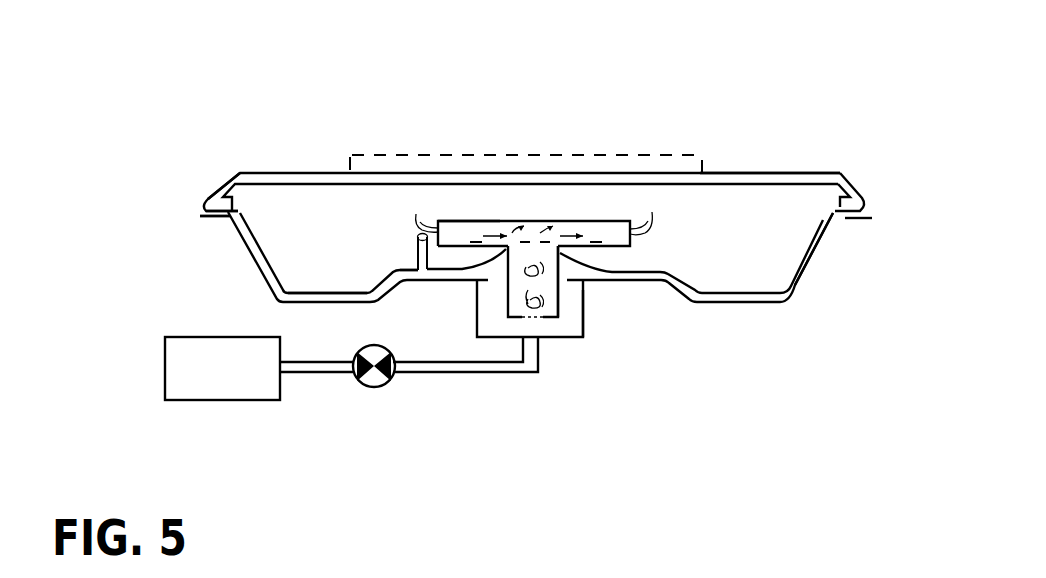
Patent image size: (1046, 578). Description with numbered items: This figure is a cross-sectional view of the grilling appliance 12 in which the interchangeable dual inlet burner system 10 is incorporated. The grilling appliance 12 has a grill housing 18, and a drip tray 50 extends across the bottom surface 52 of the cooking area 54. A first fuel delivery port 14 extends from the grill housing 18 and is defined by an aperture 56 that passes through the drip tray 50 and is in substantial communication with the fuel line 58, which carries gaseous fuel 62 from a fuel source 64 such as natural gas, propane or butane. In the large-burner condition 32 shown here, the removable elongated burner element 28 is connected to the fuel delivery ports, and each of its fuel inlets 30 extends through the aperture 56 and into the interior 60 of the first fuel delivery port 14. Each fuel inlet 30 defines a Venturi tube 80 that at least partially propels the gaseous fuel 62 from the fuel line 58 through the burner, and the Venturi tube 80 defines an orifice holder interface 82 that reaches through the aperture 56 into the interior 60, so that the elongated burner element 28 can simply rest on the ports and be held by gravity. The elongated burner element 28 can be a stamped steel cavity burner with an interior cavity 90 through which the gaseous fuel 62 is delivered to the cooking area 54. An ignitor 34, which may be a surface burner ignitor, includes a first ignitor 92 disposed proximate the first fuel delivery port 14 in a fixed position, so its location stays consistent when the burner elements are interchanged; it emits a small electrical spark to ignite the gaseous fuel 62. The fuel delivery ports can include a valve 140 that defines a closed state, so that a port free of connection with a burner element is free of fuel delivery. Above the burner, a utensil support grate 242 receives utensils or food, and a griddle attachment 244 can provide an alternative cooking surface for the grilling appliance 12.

The interchangeable dual inlet burner system 10 is at (275, 248).
The grilling appliance 12 is at (228, 110).
The first fuel delivery port 14 is at (603, 325).
The grill housing 18 is at (205, 214).
The elongated burner element 28 is at (447, 211).
The fuel inlet 30 is at (560, 295).
The large-burner condition 32 is at (748, 210).
The ignitor 34 is at (413, 261).
The drip tray 50 is at (756, 293).
The bottom surface 52 is at (283, 278).
The cooking area 54 is at (658, 150).
The aperture 56 is at (562, 248).
The fuel line 58 is at (313, 373).
The interior 60 is at (494, 303).
The gaseous fuel 62 is at (412, 228).
The fuel source 64 is at (203, 380).
The Venturi tube 80 is at (550, 314).
The orifice holder interface 82 is at (613, 262).
The interior cavity 90 is at (473, 233).
The first ignitor 92 is at (415, 246).
The valve 140 is at (377, 381).
The utensil support grate 242 is at (243, 173).
The griddle attachment 244 is at (450, 158).